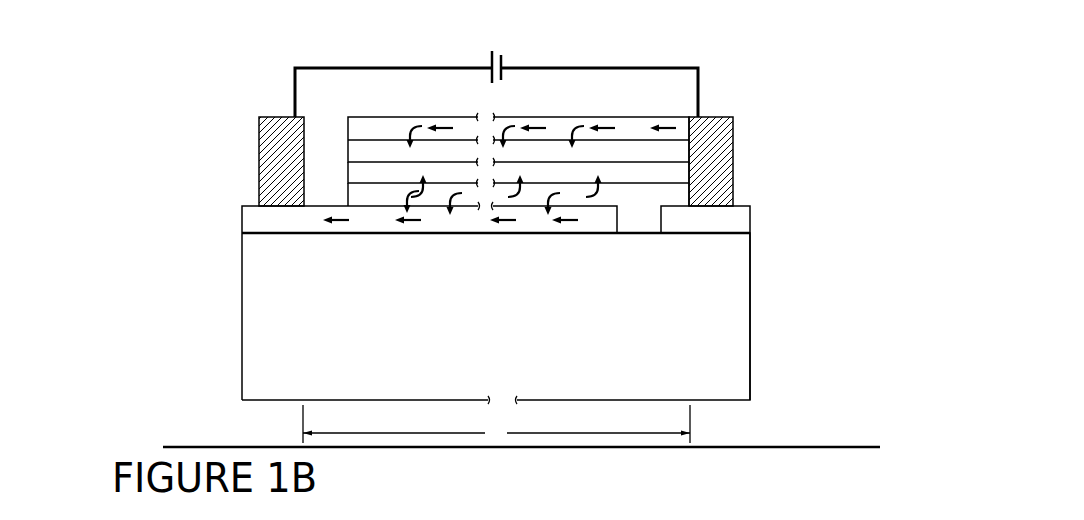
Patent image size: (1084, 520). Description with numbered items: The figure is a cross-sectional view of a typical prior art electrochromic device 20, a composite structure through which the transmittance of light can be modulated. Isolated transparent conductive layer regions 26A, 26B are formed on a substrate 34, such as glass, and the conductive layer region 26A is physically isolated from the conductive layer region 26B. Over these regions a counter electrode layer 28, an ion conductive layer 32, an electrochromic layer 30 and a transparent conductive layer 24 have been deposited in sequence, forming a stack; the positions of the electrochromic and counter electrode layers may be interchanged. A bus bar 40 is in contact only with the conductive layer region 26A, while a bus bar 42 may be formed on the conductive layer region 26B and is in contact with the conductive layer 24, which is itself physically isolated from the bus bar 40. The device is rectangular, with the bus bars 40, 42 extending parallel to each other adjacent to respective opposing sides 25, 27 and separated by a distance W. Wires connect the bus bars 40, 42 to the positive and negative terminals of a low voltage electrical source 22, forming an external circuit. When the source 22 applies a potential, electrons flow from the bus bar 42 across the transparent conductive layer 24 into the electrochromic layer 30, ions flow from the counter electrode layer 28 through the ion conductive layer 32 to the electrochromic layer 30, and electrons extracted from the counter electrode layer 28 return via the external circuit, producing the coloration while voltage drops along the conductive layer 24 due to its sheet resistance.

The electrochromic device 20 is at (790, 76).
The low voltage electrical source 22 is at (399, 50).
The transparent conductive layer 24 is at (648, 118).
The side of the device 25 is at (242, 318).
The transparent conductive layer region 26A is at (250, 226).
The transparent conductive layer region 26B is at (745, 220).
The side of the device 27 is at (750, 312).
The counter electrode layer 28 is at (355, 194).
The electrochromic layer 30 is at (355, 150).
The ion conductive layer 32 is at (355, 172).
The substrate 34 is at (514, 332).
The bus bar 40 is at (268, 180).
The bus bar 42 is at (725, 162).